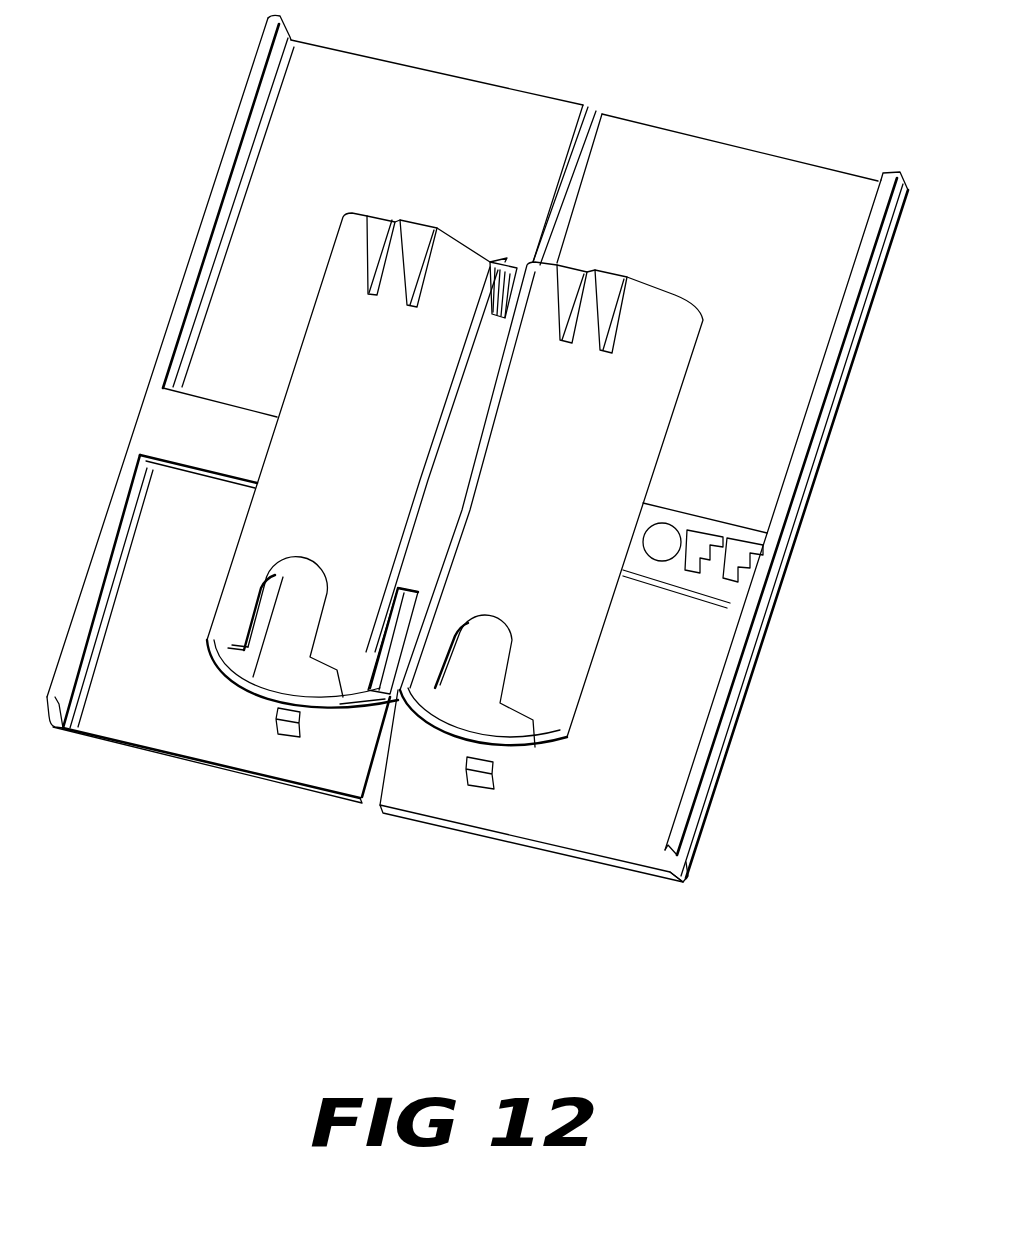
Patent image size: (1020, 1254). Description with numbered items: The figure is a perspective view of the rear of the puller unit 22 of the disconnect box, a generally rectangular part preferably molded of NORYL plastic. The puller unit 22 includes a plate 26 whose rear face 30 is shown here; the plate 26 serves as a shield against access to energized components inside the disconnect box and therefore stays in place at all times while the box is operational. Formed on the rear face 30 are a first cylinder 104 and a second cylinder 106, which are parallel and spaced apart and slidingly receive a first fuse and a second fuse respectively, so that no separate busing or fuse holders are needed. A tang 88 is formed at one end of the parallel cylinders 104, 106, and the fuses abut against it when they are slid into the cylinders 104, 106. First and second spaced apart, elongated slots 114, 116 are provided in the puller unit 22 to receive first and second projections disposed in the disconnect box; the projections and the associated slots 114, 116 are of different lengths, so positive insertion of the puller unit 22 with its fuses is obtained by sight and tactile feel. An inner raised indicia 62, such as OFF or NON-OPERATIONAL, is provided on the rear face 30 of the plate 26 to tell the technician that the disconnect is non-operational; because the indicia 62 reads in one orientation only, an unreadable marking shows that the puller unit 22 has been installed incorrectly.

The puller unit 22 is at (744, 90).
The plate 26 is at (502, 85).
The rear face 30 is at (770, 232).
The inner raised indicia 62 is at (700, 557).
The tang 88 is at (276, 712).
The first cylinder 104 is at (378, 458).
The second cylinder 106 is at (575, 500).
The first elongated slot 114 is at (560, 190).
The second elongated slot 116 is at (365, 740).